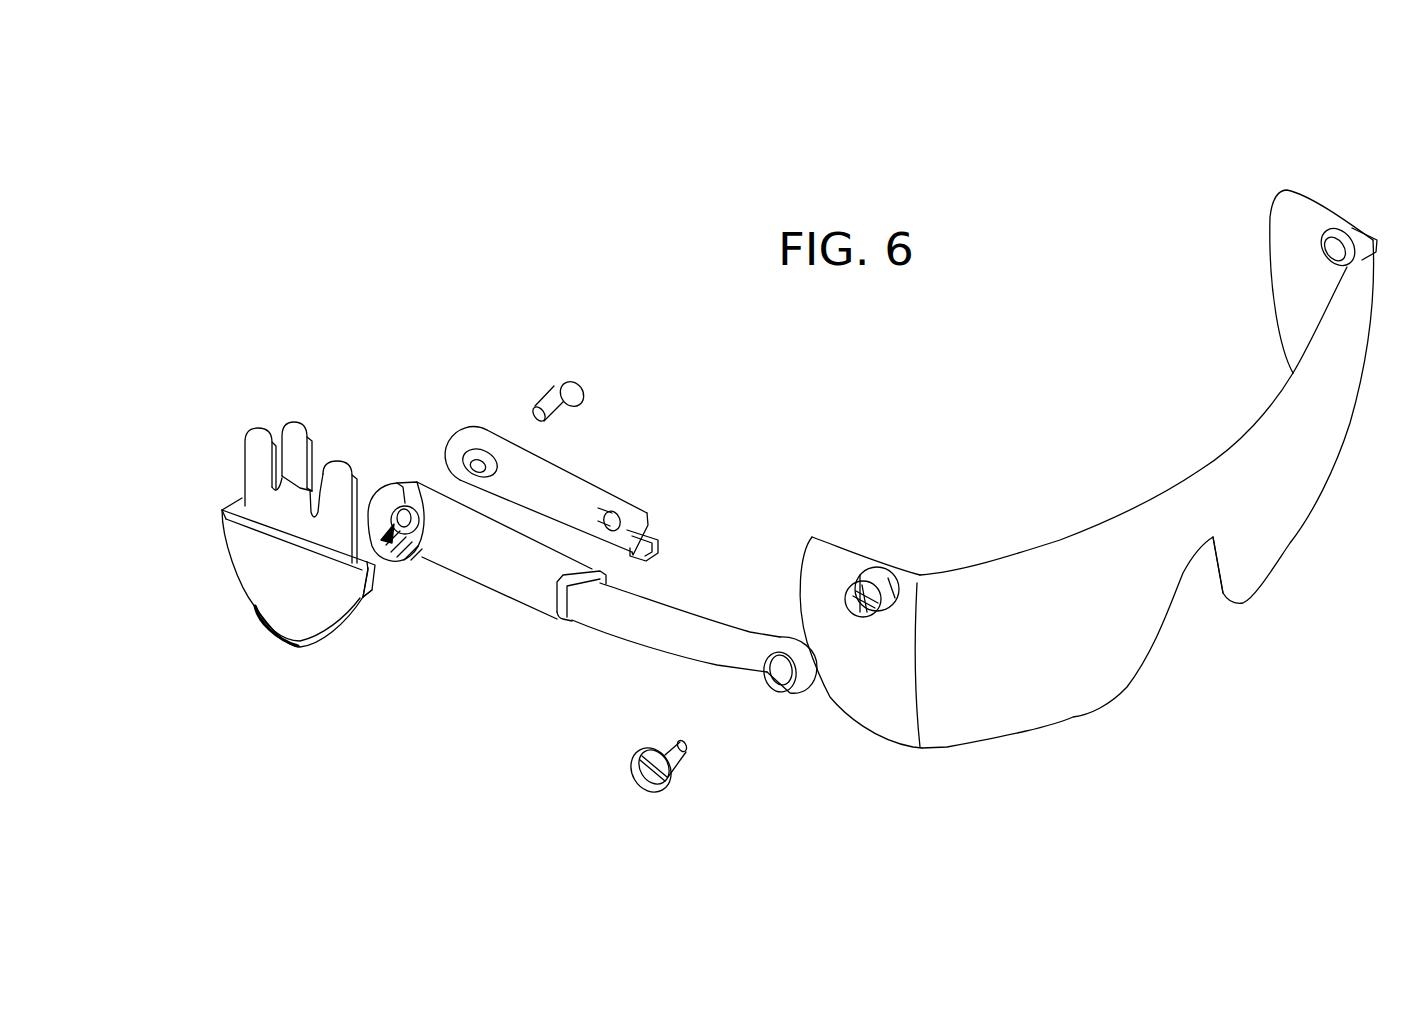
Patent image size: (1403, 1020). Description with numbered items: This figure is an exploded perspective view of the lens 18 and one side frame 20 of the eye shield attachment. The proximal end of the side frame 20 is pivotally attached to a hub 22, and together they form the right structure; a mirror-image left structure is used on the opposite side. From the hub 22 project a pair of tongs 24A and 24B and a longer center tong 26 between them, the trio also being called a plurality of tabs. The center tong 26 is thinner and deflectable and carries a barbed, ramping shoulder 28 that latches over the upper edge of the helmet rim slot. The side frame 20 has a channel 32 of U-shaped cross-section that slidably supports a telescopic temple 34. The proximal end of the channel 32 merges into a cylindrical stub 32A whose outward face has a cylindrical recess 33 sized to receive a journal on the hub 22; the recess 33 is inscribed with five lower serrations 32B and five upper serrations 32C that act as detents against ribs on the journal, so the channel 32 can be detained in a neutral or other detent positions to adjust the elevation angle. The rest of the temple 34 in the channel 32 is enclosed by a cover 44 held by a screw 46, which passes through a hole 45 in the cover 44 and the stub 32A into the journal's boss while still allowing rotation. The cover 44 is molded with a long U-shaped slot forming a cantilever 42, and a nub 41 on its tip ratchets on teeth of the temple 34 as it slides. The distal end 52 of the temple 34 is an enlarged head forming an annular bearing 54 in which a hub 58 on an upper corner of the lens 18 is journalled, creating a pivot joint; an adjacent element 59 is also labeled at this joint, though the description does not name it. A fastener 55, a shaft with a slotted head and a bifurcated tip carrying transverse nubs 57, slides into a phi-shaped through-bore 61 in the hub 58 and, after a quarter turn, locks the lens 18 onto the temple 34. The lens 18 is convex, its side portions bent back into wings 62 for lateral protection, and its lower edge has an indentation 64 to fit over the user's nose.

The lens 18 is at (1089, 519).
The side frame 20 is at (541, 650).
The hub 22 is at (255, 607).
The tong 24A is at (250, 430).
The tong 24B is at (330, 465).
The center tong 26 is at (288, 418).
The shoulder 28 is at (282, 493).
The channel 32 is at (533, 600).
The cylindrical stub 32A is at (397, 487).
The lower serrations 32B is at (393, 545).
The upper serrations 32C is at (478, 465).
The cylindrical recess 33 is at (372, 557).
The telescopic temple 34 is at (627, 638).
The nub 41 is at (628, 518).
The cantilever 42 is at (603, 515).
The cover 44 is at (553, 462).
The hole 45 is at (527, 407).
The screw 46 is at (583, 400).
The distal end 52 is at (803, 673).
The annular bearing 54 is at (762, 663).
The fastener 55 is at (650, 743).
The transverse nubs 57 is at (685, 740).
The hub 58 is at (856, 575).
The washer 59 is at (897, 585).
The through-bore 61 is at (860, 573).
The wings 62 is at (807, 557).
The indentation 64 is at (1192, 620).